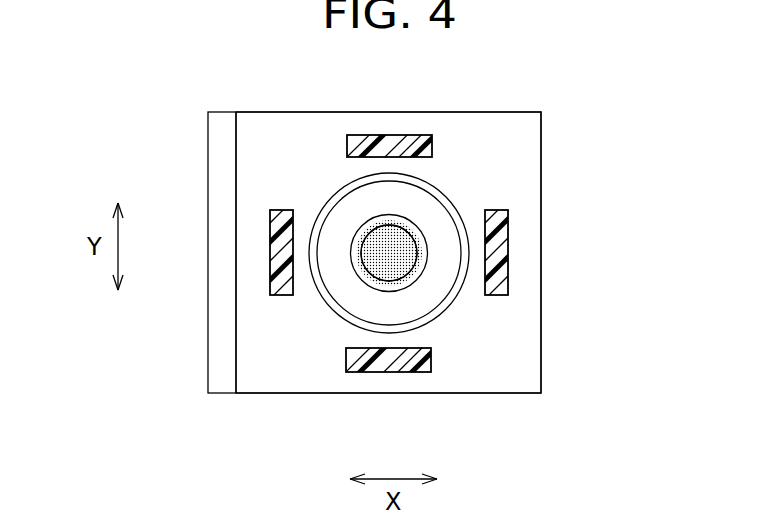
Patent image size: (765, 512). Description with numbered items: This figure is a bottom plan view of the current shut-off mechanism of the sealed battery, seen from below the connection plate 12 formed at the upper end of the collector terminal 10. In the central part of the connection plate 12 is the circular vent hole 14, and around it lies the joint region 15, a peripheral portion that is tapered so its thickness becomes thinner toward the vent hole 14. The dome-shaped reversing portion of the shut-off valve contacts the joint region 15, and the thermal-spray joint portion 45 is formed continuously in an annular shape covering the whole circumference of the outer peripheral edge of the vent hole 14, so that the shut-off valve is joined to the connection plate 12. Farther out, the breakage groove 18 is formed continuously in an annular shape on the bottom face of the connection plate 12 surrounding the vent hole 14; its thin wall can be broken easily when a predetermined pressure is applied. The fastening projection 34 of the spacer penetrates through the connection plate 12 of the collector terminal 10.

The collector terminal 10 is at (213, 350).
The connection plate 12 is at (289, 375).
The vent hole 14 is at (392, 257).
The joint region 15 is at (432, 288).
The breakage groove 18 is at (455, 212).
The thermal-spray joint portion 45 is at (350, 238).
The fastening projection 34 is at (506, 240).